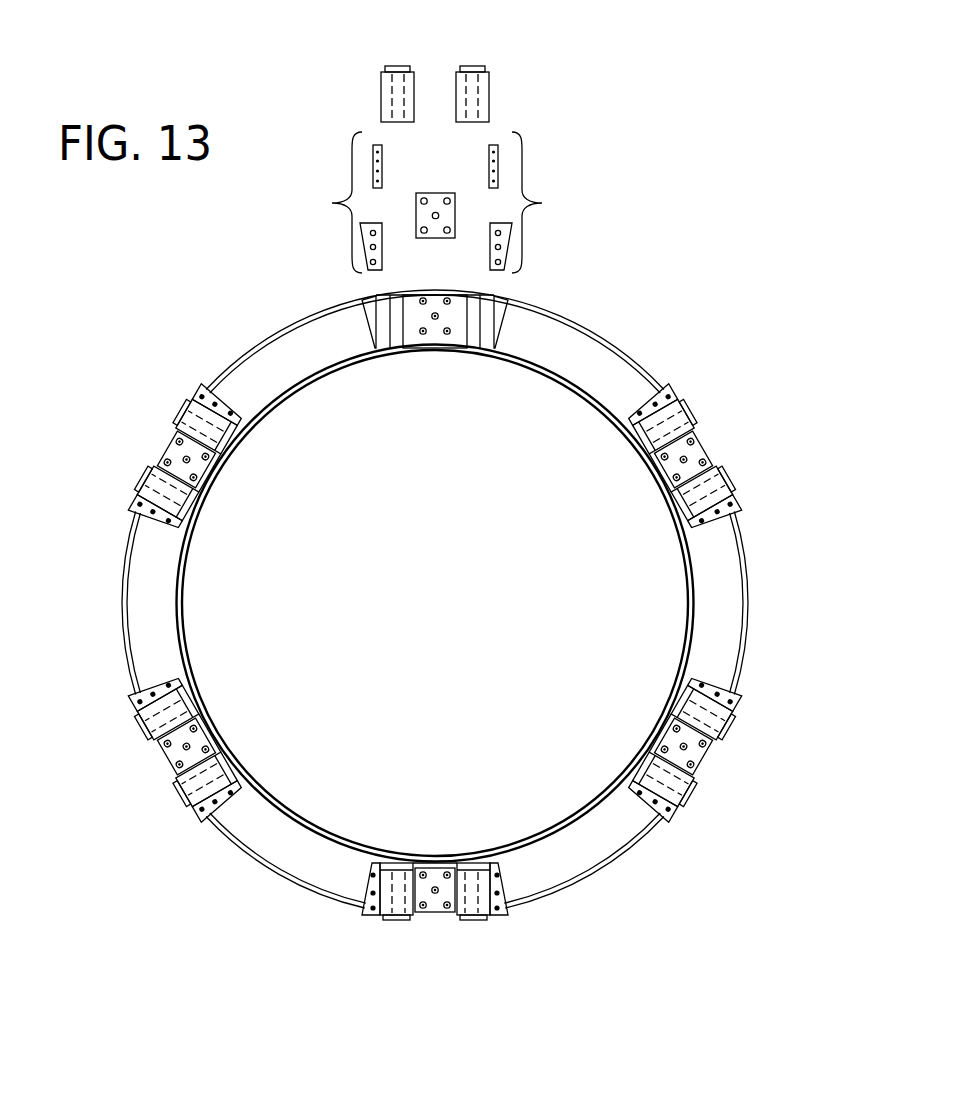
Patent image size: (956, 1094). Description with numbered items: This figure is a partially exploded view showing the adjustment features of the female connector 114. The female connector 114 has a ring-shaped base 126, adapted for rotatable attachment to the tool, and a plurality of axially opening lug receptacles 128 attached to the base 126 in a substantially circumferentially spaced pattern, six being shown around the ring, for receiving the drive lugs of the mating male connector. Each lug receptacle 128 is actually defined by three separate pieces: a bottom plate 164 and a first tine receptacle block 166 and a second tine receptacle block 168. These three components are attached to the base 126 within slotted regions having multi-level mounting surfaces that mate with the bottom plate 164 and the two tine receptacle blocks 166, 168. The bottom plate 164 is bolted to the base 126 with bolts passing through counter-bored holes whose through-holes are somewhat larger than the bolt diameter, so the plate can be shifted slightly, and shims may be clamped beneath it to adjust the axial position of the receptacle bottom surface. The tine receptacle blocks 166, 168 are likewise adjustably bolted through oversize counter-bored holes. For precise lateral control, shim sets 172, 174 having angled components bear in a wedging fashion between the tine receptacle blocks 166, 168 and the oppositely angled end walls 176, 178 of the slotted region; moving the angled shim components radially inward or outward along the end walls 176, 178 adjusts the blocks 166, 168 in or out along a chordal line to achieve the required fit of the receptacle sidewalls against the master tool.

The female connector 114 is at (652, 325).
The base 126 is at (727, 606).
The lug receptacle 128 is at (158, 442).
The bottom plate 164 is at (437, 193).
The first tine receptacle block 166 is at (381, 88).
The second tine receptacle block 168 is at (490, 88).
The shim set 172 is at (550, 203).
The shim set 174 is at (332, 203).
The angled end wall 176 is at (495, 296).
The angled end wall 178 is at (375, 296).